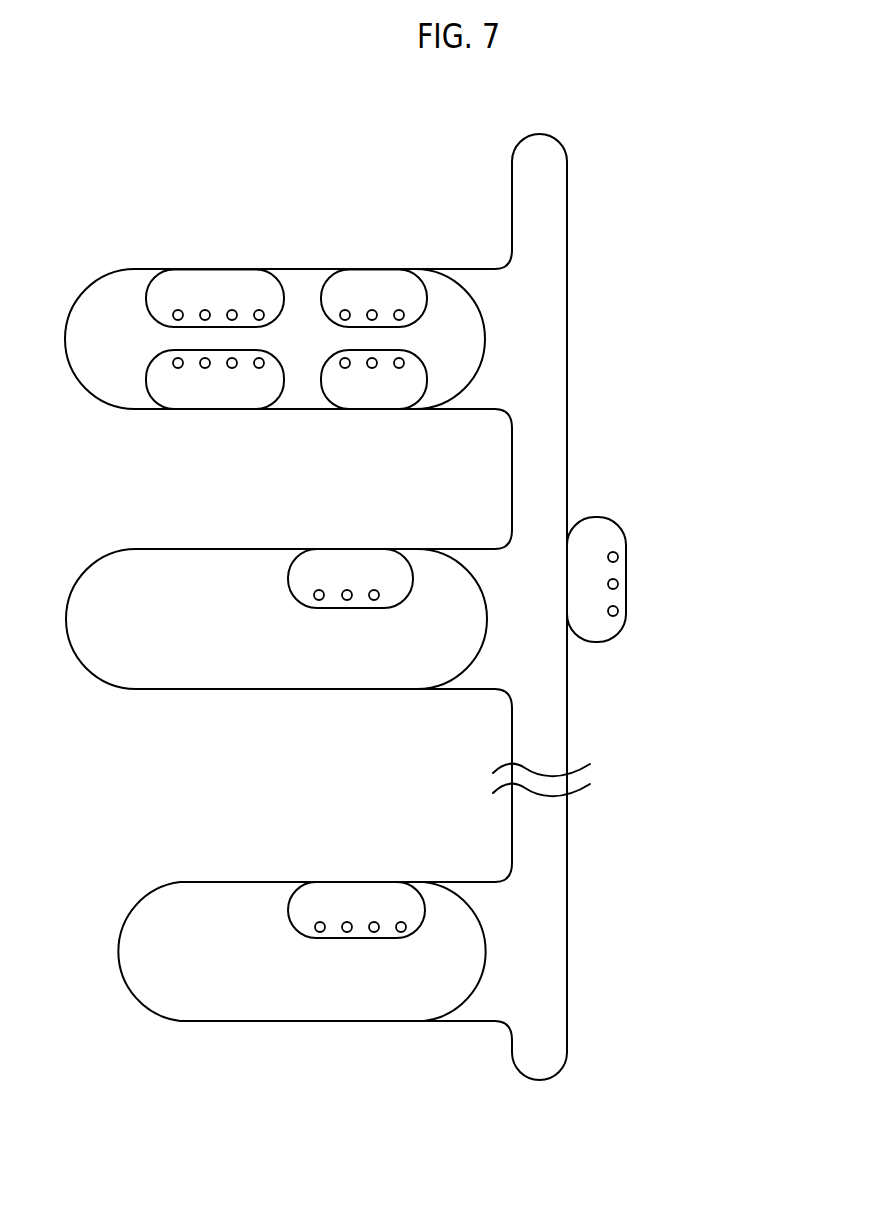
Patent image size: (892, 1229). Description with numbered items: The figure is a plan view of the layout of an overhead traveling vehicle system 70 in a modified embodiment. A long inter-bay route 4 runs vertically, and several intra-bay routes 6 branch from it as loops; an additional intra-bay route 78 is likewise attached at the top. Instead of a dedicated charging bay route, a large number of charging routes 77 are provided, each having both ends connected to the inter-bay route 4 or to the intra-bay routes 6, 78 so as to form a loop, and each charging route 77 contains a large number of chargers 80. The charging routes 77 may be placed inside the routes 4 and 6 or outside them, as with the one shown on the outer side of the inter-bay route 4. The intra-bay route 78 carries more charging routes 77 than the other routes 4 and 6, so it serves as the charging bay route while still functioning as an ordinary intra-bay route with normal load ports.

The inter-bay route 4 is at (567, 424).
The intra-bay route 6 is at (283, 549).
The overhead traveling vehicle system 70 is at (404, 1079).
The charging route 77 is at (146, 316).
The intra-bay route 78 is at (314, 269).
The charger 80 is at (257, 320).